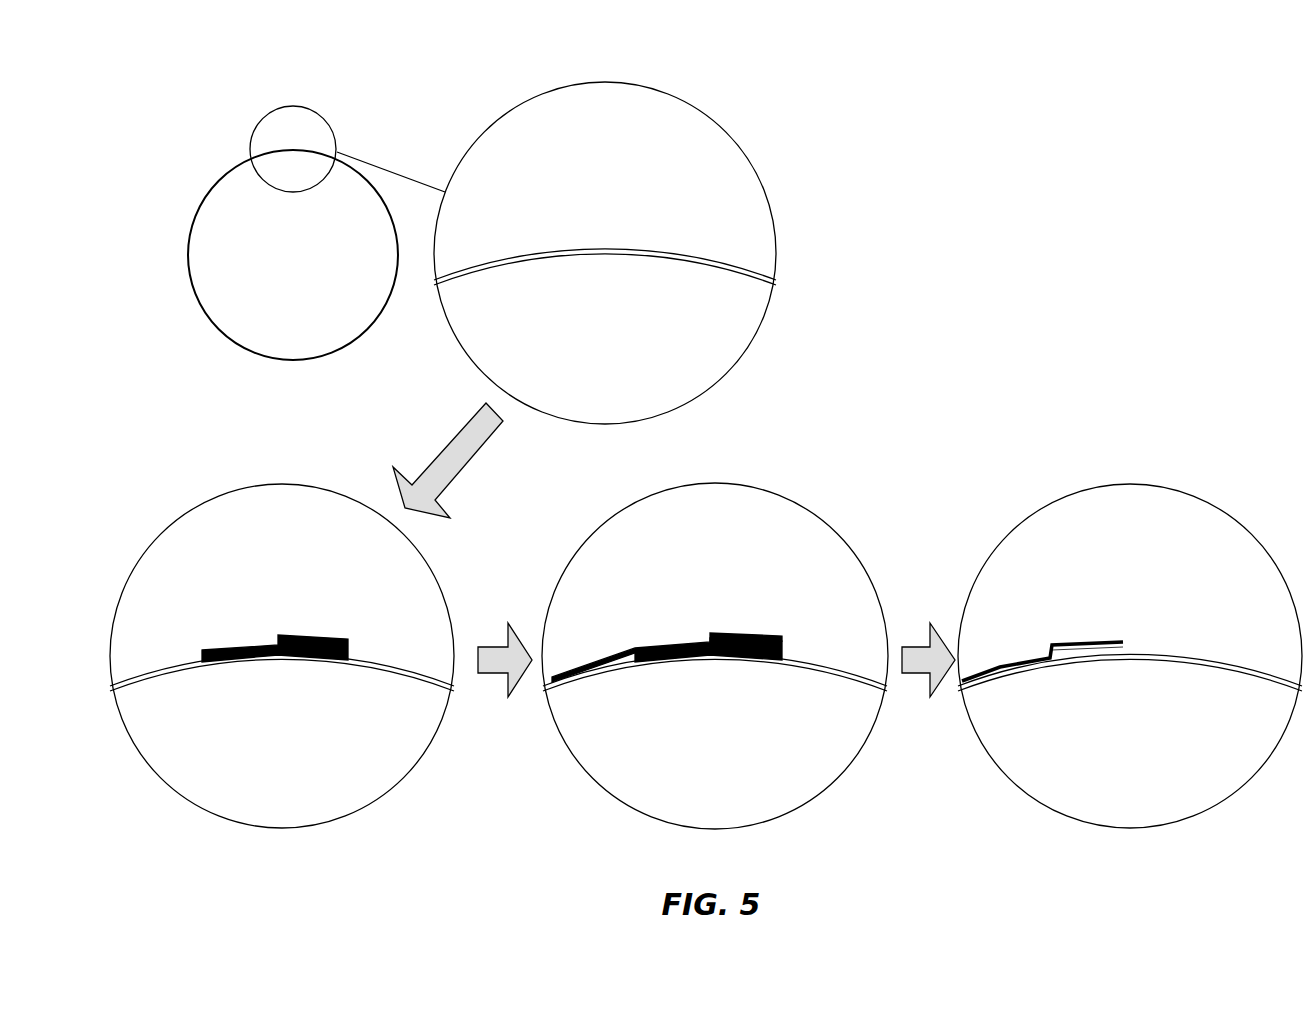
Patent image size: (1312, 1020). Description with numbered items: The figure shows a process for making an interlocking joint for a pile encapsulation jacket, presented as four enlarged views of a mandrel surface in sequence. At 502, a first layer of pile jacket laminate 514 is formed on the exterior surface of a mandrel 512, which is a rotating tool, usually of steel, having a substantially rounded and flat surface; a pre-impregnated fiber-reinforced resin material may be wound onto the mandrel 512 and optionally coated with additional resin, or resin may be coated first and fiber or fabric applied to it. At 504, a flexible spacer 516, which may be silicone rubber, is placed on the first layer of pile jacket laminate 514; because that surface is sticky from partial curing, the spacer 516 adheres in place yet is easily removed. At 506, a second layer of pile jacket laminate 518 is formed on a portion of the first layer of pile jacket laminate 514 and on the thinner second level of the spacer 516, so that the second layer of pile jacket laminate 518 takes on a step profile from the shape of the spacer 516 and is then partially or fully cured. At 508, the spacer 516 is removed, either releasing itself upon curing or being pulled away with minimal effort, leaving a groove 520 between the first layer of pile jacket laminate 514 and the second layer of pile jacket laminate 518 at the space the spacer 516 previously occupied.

The first layer forming step 502 is at (585, 461).
The spacer placing step 504 is at (273, 856).
The second layer forming step 506 is at (705, 856).
The spacer removal step 508 is at (1120, 856).
The mandrel 512 is at (208, 202).
The first layer of pile jacket laminate 514 is at (1177, 653).
The spacer 516 is at (765, 552).
The second layer of pile jacket laminate 518 is at (1073, 560).
The groove 520 is at (1112, 640).